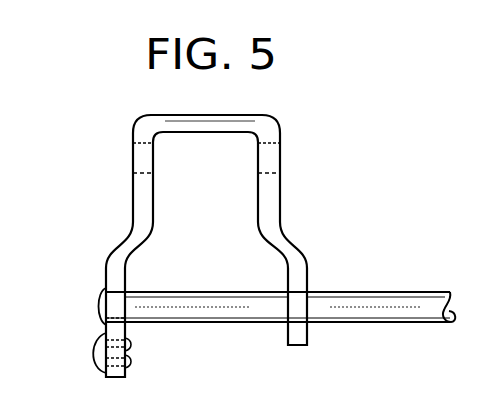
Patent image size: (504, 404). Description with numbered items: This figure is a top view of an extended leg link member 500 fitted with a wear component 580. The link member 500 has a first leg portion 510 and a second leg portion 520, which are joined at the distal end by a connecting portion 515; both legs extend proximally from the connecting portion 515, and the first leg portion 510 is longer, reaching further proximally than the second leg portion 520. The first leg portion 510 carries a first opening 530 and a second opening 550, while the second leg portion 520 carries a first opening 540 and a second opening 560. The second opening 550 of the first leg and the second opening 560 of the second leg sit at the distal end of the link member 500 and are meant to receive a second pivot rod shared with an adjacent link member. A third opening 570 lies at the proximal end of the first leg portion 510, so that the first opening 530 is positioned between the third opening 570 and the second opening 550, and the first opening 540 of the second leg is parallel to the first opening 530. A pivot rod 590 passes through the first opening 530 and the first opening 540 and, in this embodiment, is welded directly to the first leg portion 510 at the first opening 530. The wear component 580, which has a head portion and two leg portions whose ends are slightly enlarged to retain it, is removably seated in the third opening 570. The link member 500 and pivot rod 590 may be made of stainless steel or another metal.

The extended leg link member 500 is at (347, 182).
The first leg portion 510 is at (136, 212).
The connecting portion 515 is at (198, 115).
The second leg portion 520 is at (278, 217).
The first opening of first leg portion 530 is at (101, 302).
The first opening of second leg portion 540 is at (300, 300).
The second opening of first leg portion 550 is at (139, 155).
The second opening of second leg portion 560 is at (278, 157).
The third opening 570 is at (128, 352).
The wear component 580 is at (93, 347).
The pivot rod 590 is at (422, 322).